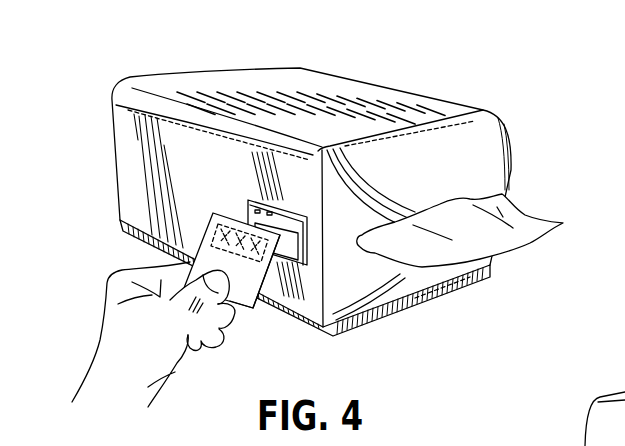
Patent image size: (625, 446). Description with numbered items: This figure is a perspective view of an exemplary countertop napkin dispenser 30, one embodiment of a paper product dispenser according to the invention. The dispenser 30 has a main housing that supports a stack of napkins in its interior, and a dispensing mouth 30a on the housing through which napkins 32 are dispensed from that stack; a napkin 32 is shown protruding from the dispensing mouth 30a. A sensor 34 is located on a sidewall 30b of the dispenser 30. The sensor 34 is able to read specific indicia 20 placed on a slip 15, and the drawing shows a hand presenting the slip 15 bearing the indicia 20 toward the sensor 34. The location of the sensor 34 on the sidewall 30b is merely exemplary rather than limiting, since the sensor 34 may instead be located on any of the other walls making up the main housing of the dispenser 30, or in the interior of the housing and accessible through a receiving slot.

The countertop napkin dispenser 30 is at (461, 71).
The dispensing mouth 30a is at (437, 203).
The sidewall 30b is at (190, 165).
The napkins 32 is at (532, 221).
The sensor 34 is at (246, 201).
The indicia 20 is at (199, 230).
The slip 15 is at (250, 310).